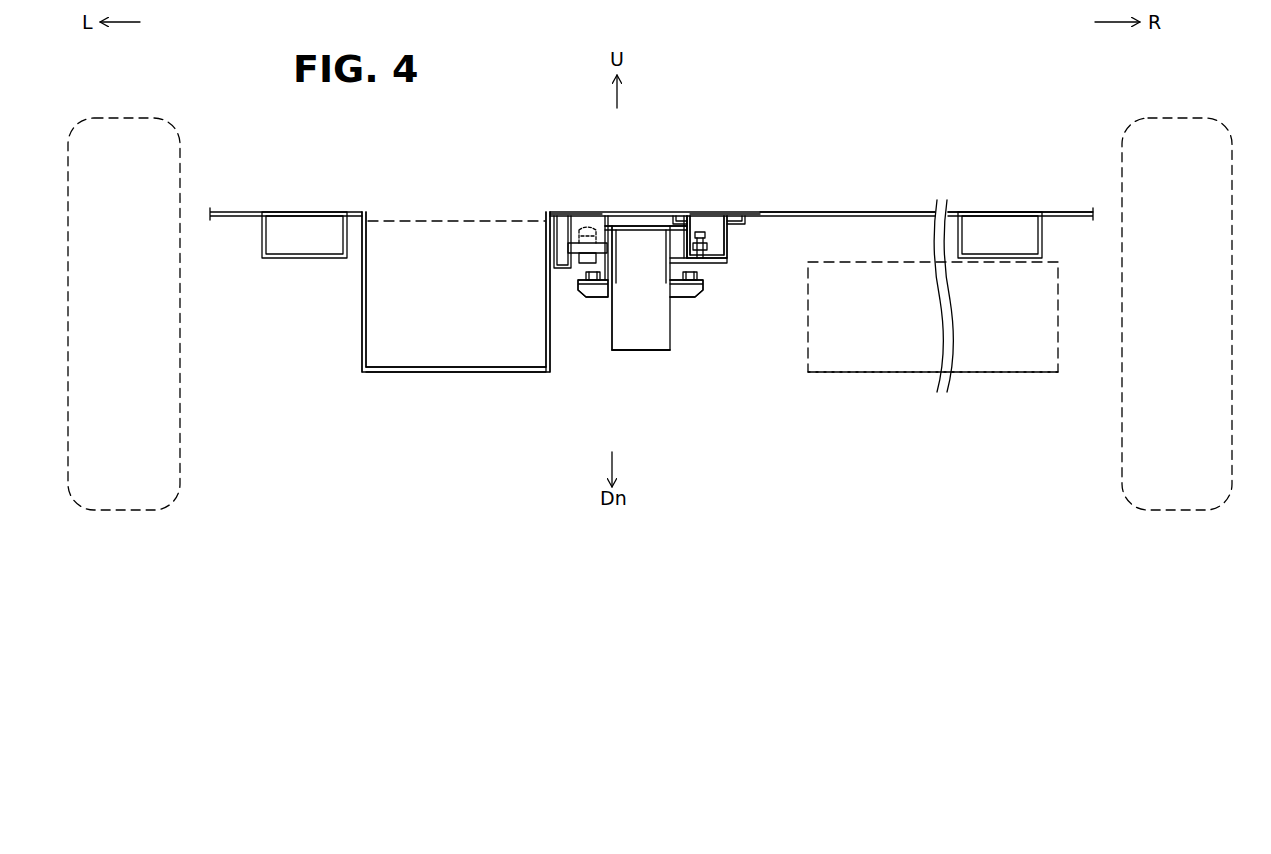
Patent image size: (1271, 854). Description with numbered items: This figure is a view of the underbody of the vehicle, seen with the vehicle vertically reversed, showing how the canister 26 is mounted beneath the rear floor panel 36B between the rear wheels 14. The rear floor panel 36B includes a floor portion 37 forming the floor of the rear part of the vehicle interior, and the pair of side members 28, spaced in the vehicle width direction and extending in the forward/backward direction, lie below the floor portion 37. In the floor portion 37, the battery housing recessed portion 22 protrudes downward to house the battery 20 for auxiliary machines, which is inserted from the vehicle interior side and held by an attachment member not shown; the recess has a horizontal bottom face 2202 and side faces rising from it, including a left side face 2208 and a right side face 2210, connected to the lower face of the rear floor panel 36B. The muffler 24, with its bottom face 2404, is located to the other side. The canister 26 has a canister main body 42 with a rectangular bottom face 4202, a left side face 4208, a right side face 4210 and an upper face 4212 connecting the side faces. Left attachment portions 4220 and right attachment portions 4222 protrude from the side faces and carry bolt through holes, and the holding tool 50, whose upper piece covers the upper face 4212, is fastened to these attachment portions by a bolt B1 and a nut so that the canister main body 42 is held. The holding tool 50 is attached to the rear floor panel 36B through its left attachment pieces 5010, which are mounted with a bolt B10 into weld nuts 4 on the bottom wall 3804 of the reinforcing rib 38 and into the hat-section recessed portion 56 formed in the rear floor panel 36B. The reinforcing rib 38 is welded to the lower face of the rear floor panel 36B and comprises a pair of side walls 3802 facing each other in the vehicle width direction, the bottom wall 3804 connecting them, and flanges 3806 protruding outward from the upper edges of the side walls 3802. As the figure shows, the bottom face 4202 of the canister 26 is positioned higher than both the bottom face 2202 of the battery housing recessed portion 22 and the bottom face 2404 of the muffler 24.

The weld nut 4 is at (580, 228).
The rear wheel 14 is at (108, 117).
The battery for auxiliary machines 20 is at (395, 212).
The battery housing recessed portion 22 is at (415, 378).
The bottom face 2202 is at (372, 376).
The left side face 2208 is at (362, 300).
The right side face 2210 is at (551, 350).
The muffler 24 is at (880, 376).
The bottom face 2404 is at (1022, 376).
The canister 26 is at (642, 364).
The side member 28 is at (290, 258).
The rear floor panel 36B is at (853, 210).
The floor portion 37 is at (905, 212).
The reinforcing rib 38 is at (727, 240).
The side wall 3802 is at (712, 240).
The bottom wall 3804 is at (730, 261).
The flange 3806 is at (680, 220).
The canister main body 42 is at (650, 328).
The bottom face 4202 is at (655, 352).
The left side face 4208 is at (610, 340).
The right side face 4210 is at (670, 327).
The upper face 4212 is at (604, 222).
The left attachment portion 4220 is at (690, 297).
The right attachment portion 4222 is at (597, 298).
The holding tool 50 is at (640, 224).
The left attachment piece 5010 is at (575, 257).
The recessed portion 56 is at (562, 232).
The bolt B1 is at (575, 282).
The bolt B10 is at (583, 272).